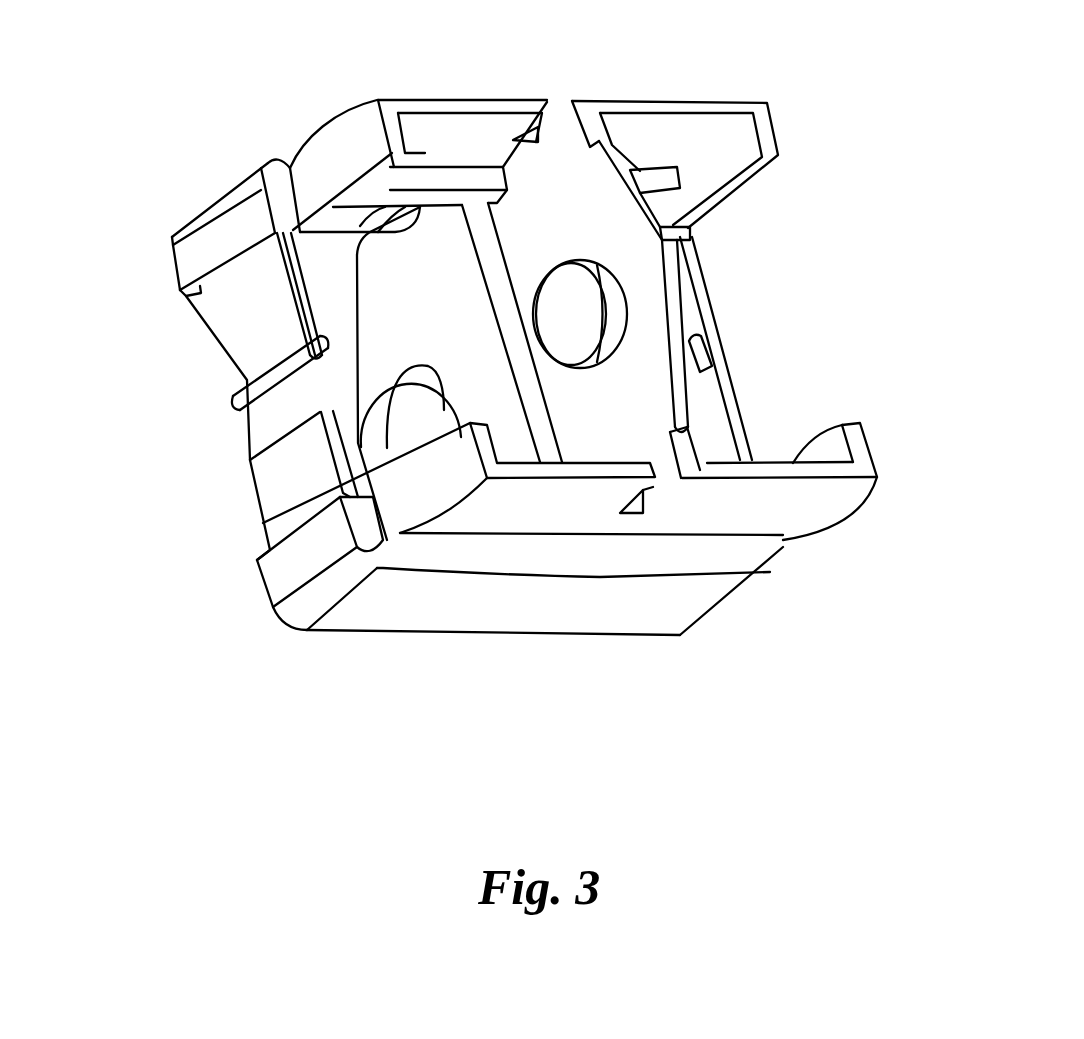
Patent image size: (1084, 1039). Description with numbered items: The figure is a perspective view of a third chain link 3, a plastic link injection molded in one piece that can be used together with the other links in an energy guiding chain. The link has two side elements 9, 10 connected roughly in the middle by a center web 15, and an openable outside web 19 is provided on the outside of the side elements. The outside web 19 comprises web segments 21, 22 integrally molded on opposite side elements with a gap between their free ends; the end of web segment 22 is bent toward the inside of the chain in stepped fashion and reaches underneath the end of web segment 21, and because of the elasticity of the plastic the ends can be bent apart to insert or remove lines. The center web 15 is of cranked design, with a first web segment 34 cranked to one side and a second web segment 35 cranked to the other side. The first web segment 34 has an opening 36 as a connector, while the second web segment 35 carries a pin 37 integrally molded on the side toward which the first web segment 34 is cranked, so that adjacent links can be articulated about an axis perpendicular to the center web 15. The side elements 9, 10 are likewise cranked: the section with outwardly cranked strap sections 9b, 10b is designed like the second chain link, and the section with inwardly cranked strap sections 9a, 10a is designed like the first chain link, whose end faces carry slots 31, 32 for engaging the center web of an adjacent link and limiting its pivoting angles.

The third chain link 3 is at (226, 163).
The side element 9 is at (505, 635).
The inwardly cranked strap section 9a is at (706, 509).
The outwardly cranked strap section 9b is at (582, 600).
The side element 10 is at (498, 100).
The inwardly cranked strap section 10a is at (313, 130).
The outwardly cranked strap section 10b is at (204, 206).
The center web 15 is at (697, 260).
The outside web 19 is at (733, 330).
The web segment 21 is at (697, 287).
The web segment 22 is at (740, 417).
The slot 31 is at (553, 119).
The slot 32 is at (657, 487).
The first web segment 34 is at (393, 325).
The second web segment 35 is at (620, 413).
The opening 36 is at (282, 527).
The pin 37 is at (575, 328).